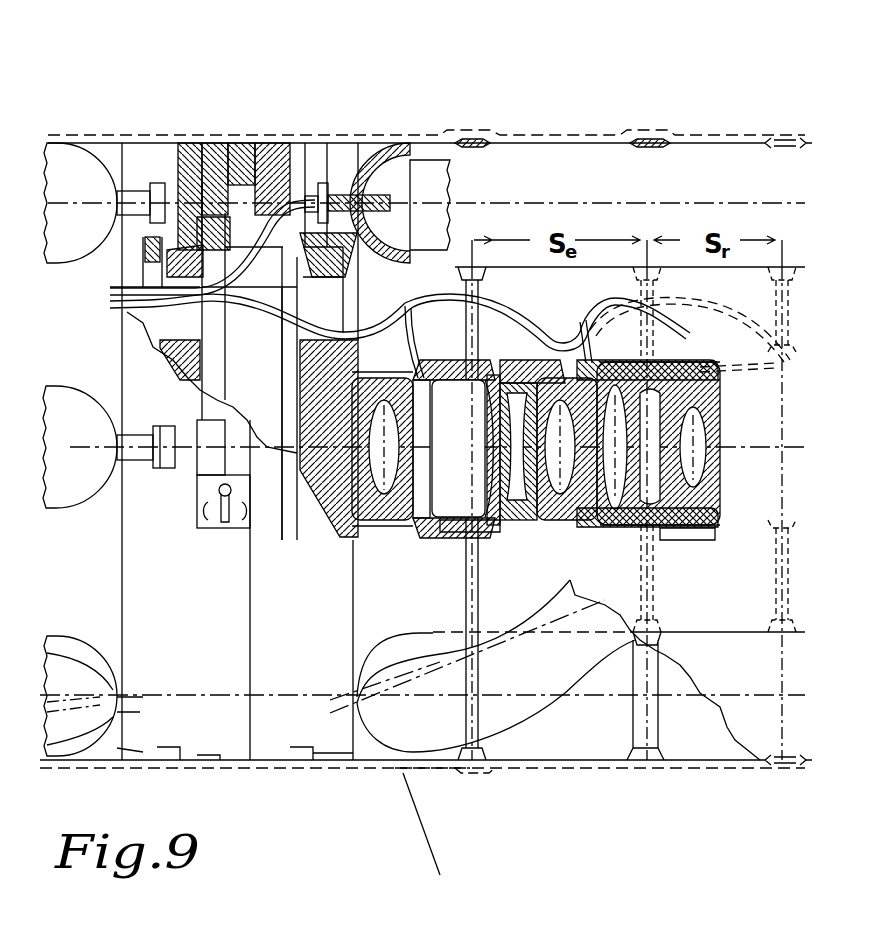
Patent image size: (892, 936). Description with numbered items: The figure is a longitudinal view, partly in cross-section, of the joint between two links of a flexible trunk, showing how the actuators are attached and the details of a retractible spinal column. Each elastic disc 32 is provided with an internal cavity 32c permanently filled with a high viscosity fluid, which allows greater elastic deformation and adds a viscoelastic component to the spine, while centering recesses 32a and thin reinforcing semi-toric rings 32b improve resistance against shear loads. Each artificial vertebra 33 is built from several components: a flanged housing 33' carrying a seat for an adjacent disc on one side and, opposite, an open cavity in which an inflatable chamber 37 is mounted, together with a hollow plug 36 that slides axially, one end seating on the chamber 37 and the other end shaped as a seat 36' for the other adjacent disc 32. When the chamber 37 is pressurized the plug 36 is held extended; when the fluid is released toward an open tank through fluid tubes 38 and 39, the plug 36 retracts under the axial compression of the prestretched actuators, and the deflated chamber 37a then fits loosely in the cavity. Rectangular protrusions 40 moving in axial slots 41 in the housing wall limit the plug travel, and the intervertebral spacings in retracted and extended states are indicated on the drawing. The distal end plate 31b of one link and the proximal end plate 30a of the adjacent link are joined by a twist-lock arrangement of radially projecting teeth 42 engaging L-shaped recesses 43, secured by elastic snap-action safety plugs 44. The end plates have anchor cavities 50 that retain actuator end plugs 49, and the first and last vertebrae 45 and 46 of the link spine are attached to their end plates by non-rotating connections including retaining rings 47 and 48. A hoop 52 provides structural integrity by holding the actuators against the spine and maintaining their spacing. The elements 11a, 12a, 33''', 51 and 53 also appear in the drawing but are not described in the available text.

The upper frame tube 11a is at (510, 143).
The lower frame tube 12a is at (503, 773).
The proximal end plate 30a is at (277, 143).
The distal end plate 31b is at (185, 143).
The elastic disc 32 is at (723, 427).
The recess 32a is at (715, 408).
The reinforcing semi-toric ring 32b is at (712, 490).
The internal cavity 32c is at (805, 447).
The artificial vertebra 33 is at (698, 555).
The flanged housing 33' is at (454, 425).
The bearing inner ring 33''' is at (363, 477).
The hollow plug 36 is at (498, 399).
The seat 36' is at (567, 480).
The inflatable chamber 37 is at (425, 517).
The deflated chamber 37a is at (627, 500).
The fluid tube 38 is at (407, 343).
The fluid tube 39 is at (368, 312).
The rectangular protrusion 40 is at (523, 517).
The axial slot 41 is at (480, 527).
The tooth 42 is at (222, 142).
The L-shaped recess 43 is at (200, 495).
The snap-action safety plug 44 is at (200, 525).
The first vertebra 45 is at (295, 372).
The last vertebra 46 is at (113, 290).
The retaining ring 47 is at (278, 327).
The retaining ring 48 is at (148, 245).
The actuator end plug 49 is at (335, 197).
The anchor cavity 50 is at (317, 147).
The lead wire 51 is at (117, 304).
The hoop 52 is at (467, 143).
The cover 53 is at (407, 143).